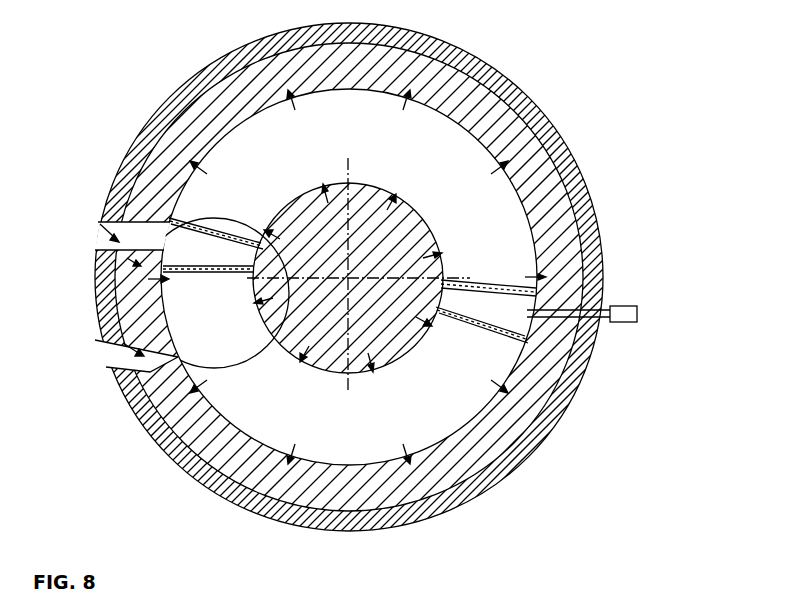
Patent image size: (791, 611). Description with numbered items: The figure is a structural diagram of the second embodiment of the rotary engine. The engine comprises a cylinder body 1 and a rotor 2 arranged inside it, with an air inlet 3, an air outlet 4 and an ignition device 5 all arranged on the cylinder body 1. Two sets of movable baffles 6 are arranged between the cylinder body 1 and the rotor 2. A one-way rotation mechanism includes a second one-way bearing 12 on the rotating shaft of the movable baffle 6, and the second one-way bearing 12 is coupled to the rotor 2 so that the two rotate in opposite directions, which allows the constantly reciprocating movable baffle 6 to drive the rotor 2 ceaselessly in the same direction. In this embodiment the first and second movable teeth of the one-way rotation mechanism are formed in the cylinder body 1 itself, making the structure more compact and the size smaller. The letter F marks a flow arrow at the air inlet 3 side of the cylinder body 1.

The cylinder body 1 is at (175, 118).
The rotor 2 is at (436, 227).
The air inlet 3 is at (98, 222).
The air outlet 4 is at (95, 340).
The ignition device 5 is at (627, 303).
The movable baffle 6 is at (481, 331).
The second one-way bearing 12 is at (448, 269).
The fluid flow F is at (96, 250).